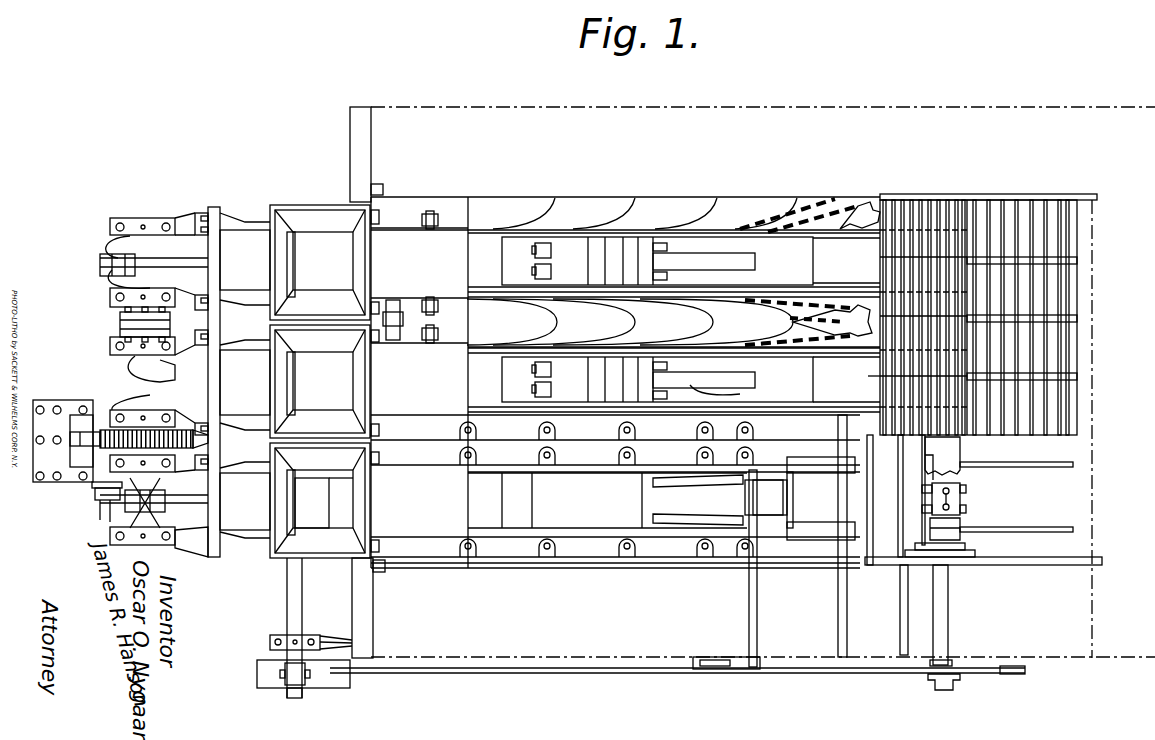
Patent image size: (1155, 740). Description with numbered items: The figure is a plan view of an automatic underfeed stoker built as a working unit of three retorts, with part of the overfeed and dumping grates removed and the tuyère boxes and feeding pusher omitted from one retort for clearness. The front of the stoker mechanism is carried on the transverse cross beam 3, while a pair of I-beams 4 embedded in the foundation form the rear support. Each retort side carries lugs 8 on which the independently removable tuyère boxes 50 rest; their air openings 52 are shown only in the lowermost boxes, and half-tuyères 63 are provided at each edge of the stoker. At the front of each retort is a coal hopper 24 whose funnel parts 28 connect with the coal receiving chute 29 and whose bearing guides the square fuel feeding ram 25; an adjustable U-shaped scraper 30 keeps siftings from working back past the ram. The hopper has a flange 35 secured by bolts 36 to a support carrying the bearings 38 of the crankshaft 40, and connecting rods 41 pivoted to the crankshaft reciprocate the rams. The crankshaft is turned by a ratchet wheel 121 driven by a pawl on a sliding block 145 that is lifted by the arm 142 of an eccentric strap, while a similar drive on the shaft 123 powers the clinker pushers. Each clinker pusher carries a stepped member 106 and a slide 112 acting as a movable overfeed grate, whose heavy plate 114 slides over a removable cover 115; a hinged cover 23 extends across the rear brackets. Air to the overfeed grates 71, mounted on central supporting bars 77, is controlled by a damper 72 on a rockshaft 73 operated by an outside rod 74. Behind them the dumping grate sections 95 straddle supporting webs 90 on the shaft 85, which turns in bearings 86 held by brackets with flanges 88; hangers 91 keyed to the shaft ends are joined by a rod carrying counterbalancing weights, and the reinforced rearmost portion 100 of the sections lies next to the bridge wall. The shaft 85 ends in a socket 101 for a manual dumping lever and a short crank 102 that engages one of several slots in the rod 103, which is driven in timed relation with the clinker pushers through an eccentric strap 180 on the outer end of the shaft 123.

The cross beam 3 is at (357, 141).
The I-beams 4 is at (850, 618).
The lugs 8 is at (548, 452).
The cover 23 is at (846, 320).
The coal hopper 24 is at (238, 572).
The fuel feeding ram 25 is at (311, 448).
The funnel parts 28 is at (330, 530).
The coal receiving chute 29 is at (300, 210).
The U-shaped scraper 30 is at (296, 258).
The flange 35 is at (208, 494).
The bolts 36 is at (214, 210).
The bearings 38 is at (132, 222).
The crankshaft 40 is at (112, 270).
The connecting rods 41 is at (175, 262).
The tuyère box 50 is at (850, 288).
The air openings 52 is at (822, 203).
The half-tuyères 63 is at (686, 198).
The overfeed grates 71 is at (965, 193).
The damper 72 is at (755, 497).
The rockshaft 73 is at (758, 600).
The rod 74 is at (715, 658).
The supporting bars 77 is at (905, 350).
The shaft 85 is at (948, 614).
The bearings 86 is at (950, 498).
The flanges 88 is at (922, 498).
The supporting web 90 is at (1050, 530).
The hanger 91 is at (962, 540).
The grate sections 95 is at (1060, 231).
The discharge point 100 is at (1078, 297).
The socket 101 is at (948, 688).
The short crank 102 is at (945, 662).
The rod 103 is at (895, 674).
The member 106 is at (561, 379).
The slide 112 is at (750, 384).
The heavy plate 114 is at (674, 307).
The removable cover 115 is at (880, 232).
The ratchet wheel 121 is at (92, 395).
The shaft 123 is at (287, 616).
The arm 142 is at (72, 458).
The sliding block 145 is at (120, 437).
The eccentric strap 180 is at (257, 678).